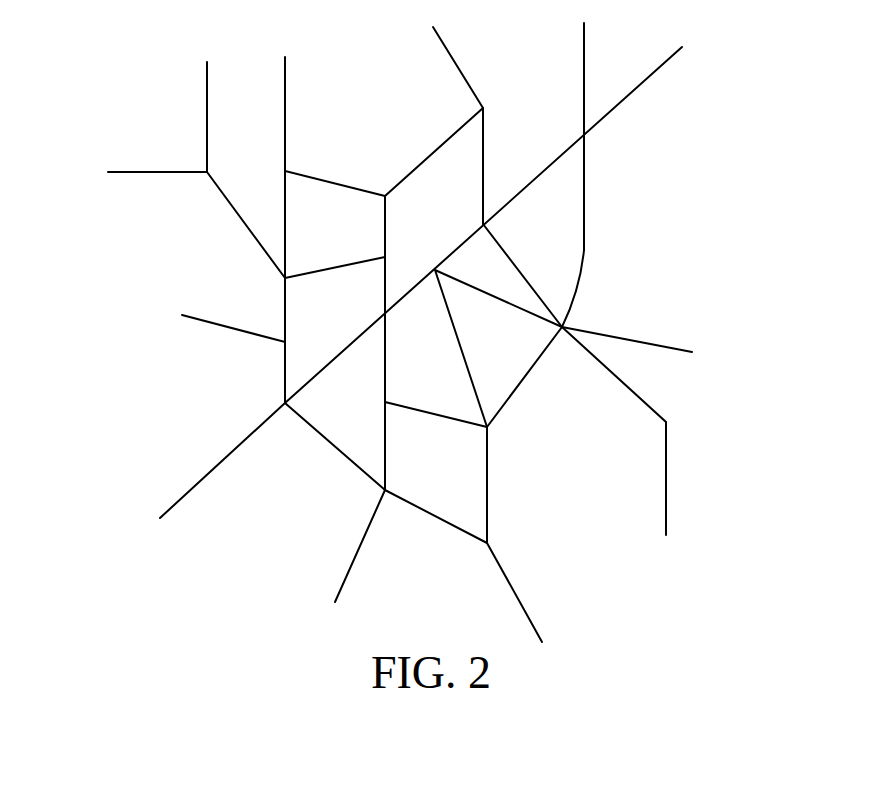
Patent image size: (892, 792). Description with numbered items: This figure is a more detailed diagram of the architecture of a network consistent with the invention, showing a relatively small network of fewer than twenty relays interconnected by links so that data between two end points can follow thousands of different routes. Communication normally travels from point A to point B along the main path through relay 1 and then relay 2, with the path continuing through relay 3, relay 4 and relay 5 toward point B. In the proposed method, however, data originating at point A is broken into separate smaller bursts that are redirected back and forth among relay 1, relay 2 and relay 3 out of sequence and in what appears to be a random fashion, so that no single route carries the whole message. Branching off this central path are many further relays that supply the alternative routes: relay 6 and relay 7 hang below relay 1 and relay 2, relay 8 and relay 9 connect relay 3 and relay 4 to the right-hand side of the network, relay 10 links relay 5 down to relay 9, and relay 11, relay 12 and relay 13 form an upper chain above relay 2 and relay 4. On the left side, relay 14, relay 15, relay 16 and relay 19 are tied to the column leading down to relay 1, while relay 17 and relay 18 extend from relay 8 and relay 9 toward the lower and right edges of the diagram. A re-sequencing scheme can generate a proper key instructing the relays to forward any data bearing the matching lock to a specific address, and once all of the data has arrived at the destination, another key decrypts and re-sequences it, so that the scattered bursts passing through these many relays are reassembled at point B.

The relay 1 is at (335, 416).
The relay 2 is at (374, 346).
The relay 3 is at (493, 333).
The relay 4 is at (511, 263).
The relay 5 is at (573, 136).
The relay 6 is at (411, 533).
The relay 7 is at (436, 430).
The relay 8 is at (498, 482).
The relay 9 is at (589, 377).
The relay 10 is at (590, 282).
The relay 11 is at (458, 125).
The relay 12 is at (421, 182).
The relay 13 is at (372, 272).
The relay 14 is at (335, 240).
The relay 15 is at (233, 310).
The relay 16 is at (318, 126).
The relay 17 is at (496, 568).
The relay 18 is at (614, 431).
The relay 19 is at (196, 170).
The point A is at (212, 472).
The point B is at (496, 212).